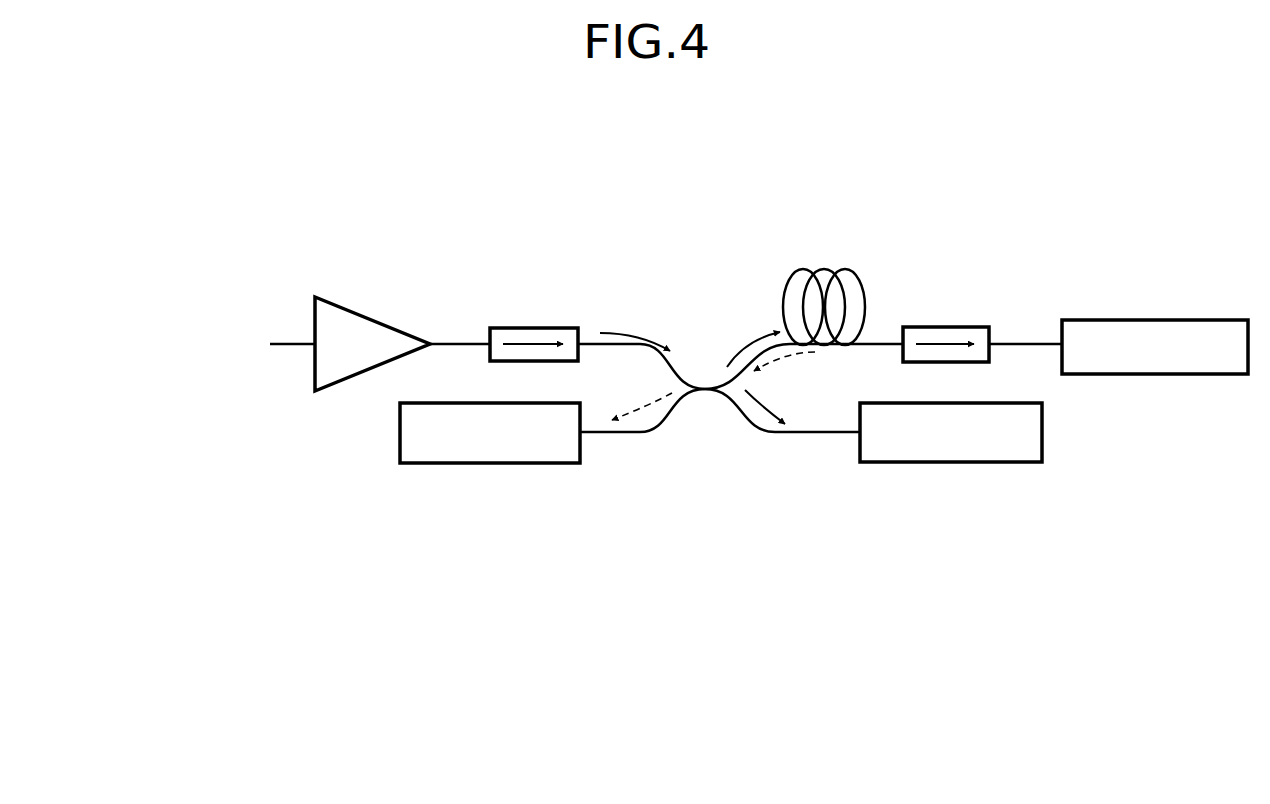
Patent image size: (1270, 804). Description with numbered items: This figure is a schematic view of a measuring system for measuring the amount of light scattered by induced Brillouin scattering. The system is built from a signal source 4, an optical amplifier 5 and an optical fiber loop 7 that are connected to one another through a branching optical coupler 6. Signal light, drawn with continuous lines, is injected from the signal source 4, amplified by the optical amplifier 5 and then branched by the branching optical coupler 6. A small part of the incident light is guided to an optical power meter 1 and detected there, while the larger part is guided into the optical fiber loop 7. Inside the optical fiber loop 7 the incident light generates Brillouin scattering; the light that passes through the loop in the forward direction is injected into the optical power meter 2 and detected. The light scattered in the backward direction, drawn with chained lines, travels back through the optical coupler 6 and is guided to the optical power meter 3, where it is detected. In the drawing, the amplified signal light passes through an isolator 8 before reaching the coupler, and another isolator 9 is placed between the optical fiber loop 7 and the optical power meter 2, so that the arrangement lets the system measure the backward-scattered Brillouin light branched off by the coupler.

The optical power meter 1 is at (1006, 463).
The optical power meter 2 is at (1203, 320).
The optical power meter 3 is at (516, 465).
The signal source 4 is at (176, 341).
The optical amplifier 5 is at (338, 305).
The branching optical coupler 6 is at (708, 402).
The optical fiber loop 7 is at (826, 263).
The isolator 8 is at (512, 328).
The isolator 9 is at (931, 327).